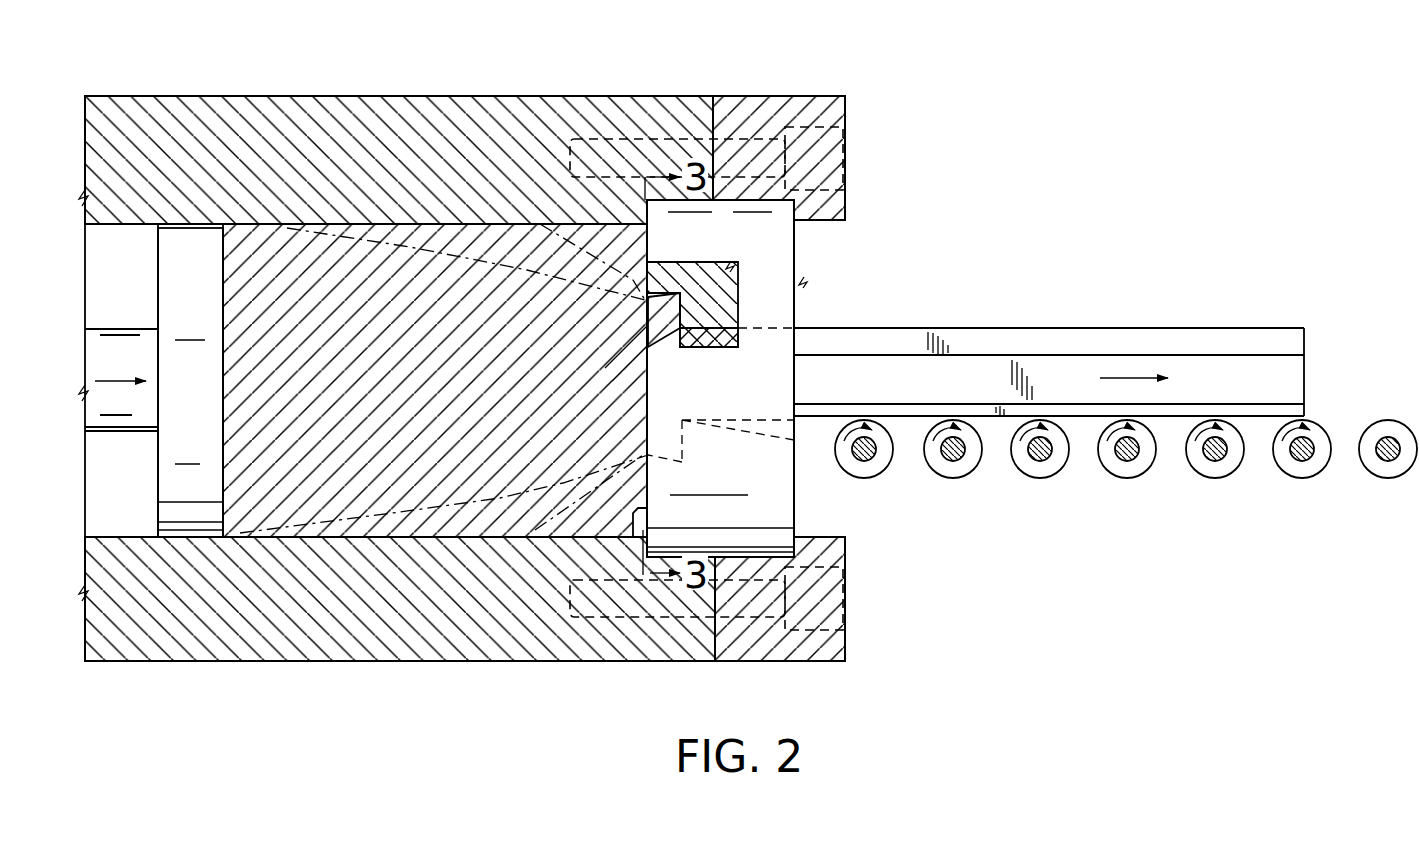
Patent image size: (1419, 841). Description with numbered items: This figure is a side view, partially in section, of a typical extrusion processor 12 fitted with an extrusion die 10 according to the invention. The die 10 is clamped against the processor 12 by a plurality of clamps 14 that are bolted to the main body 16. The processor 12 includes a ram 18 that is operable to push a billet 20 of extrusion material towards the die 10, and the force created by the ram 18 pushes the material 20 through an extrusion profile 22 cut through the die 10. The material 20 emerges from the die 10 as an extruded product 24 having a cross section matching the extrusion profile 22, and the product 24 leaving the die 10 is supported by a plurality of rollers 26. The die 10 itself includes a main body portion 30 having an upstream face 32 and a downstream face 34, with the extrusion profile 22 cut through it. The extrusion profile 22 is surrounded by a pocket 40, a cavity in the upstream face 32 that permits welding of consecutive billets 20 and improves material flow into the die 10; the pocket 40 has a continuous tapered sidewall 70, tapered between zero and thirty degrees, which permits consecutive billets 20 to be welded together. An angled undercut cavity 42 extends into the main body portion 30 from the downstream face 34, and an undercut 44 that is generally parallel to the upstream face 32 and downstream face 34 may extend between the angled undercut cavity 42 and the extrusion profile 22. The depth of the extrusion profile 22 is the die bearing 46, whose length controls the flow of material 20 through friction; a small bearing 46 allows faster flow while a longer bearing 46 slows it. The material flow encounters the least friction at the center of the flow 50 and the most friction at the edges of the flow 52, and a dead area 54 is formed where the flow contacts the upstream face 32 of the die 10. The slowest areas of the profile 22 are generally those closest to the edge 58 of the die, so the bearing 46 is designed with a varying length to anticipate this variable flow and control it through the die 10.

The extrusion die 10 is at (784, 301).
The extrusion processor 12 is at (399, 113).
The clamps 14 is at (823, 102).
The main body 16 is at (372, 100).
The ram 18 is at (197, 243).
The billet 20 is at (312, 280).
The extrusion profile 22 is at (692, 416).
The extruded product 24 is at (1086, 328).
The rollers 26 is at (1107, 463).
The main body portion 30 is at (780, 486).
The upstream face 32 is at (630, 530).
The downstream face 34 is at (797, 515).
The pocket 40 is at (670, 290).
The angled undercut cavity 42 is at (738, 318).
The undercut 44 is at (703, 334).
The die bearing 46 is at (686, 332).
The center of the flow 50 is at (615, 397).
The edges of the flow 52 is at (498, 232).
The dead area 54 is at (627, 237).
The edge of the die 58 is at (755, 198).
The tapered sidewall 70 is at (665, 460).